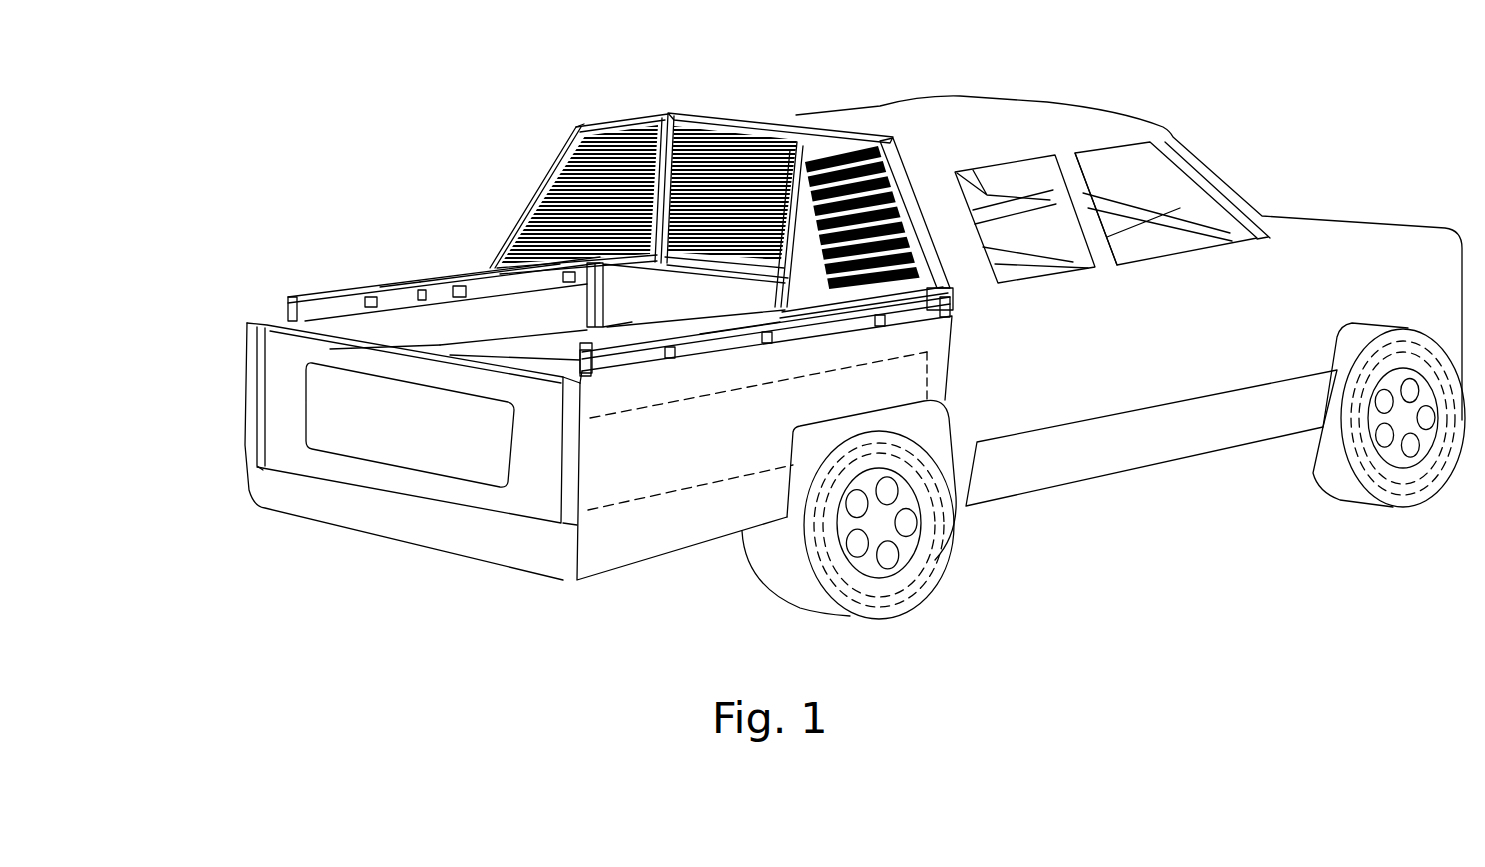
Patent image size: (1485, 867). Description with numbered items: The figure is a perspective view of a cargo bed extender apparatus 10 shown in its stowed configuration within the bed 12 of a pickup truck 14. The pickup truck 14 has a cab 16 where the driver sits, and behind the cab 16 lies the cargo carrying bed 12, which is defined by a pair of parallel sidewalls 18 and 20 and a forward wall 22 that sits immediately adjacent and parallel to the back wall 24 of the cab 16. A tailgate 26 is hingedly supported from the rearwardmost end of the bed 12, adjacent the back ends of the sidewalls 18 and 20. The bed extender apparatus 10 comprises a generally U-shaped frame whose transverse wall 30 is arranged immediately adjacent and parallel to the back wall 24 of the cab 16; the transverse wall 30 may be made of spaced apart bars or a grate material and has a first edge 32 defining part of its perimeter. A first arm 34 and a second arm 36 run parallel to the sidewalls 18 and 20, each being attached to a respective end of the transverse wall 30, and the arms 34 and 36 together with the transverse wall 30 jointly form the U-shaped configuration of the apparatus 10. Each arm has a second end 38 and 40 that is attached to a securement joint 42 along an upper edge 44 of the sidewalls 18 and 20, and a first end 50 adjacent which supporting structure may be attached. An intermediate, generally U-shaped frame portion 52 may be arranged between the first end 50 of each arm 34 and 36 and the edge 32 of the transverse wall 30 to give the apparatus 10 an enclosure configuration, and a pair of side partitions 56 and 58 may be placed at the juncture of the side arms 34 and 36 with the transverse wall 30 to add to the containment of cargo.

The cargo bed extender apparatus 10 is at (713, 192).
The bed 12 is at (430, 320).
The pickup truck 14 is at (876, 102).
The cab 16 is at (1210, 150).
The sidewall 18 is at (350, 327).
The sidewall 20 is at (664, 470).
The forward wall 22 is at (665, 290).
The back wall 24 is at (723, 130).
The tailgate 26 is at (270, 432).
The transverse wall 30 is at (626, 140).
The first edge 32 is at (678, 112).
The first arm 34 is at (450, 275).
The second arm 36 is at (575, 342).
The second end 38 is at (418, 278).
The second end 40 is at (712, 327).
The securement joint 42 is at (440, 292).
The upper edge 44 is at (300, 305).
The first end 50 is at (570, 282).
The intermediate frame portion 52 is at (898, 152).
The side partition 56 is at (520, 243).
The side partition 58 is at (938, 290).